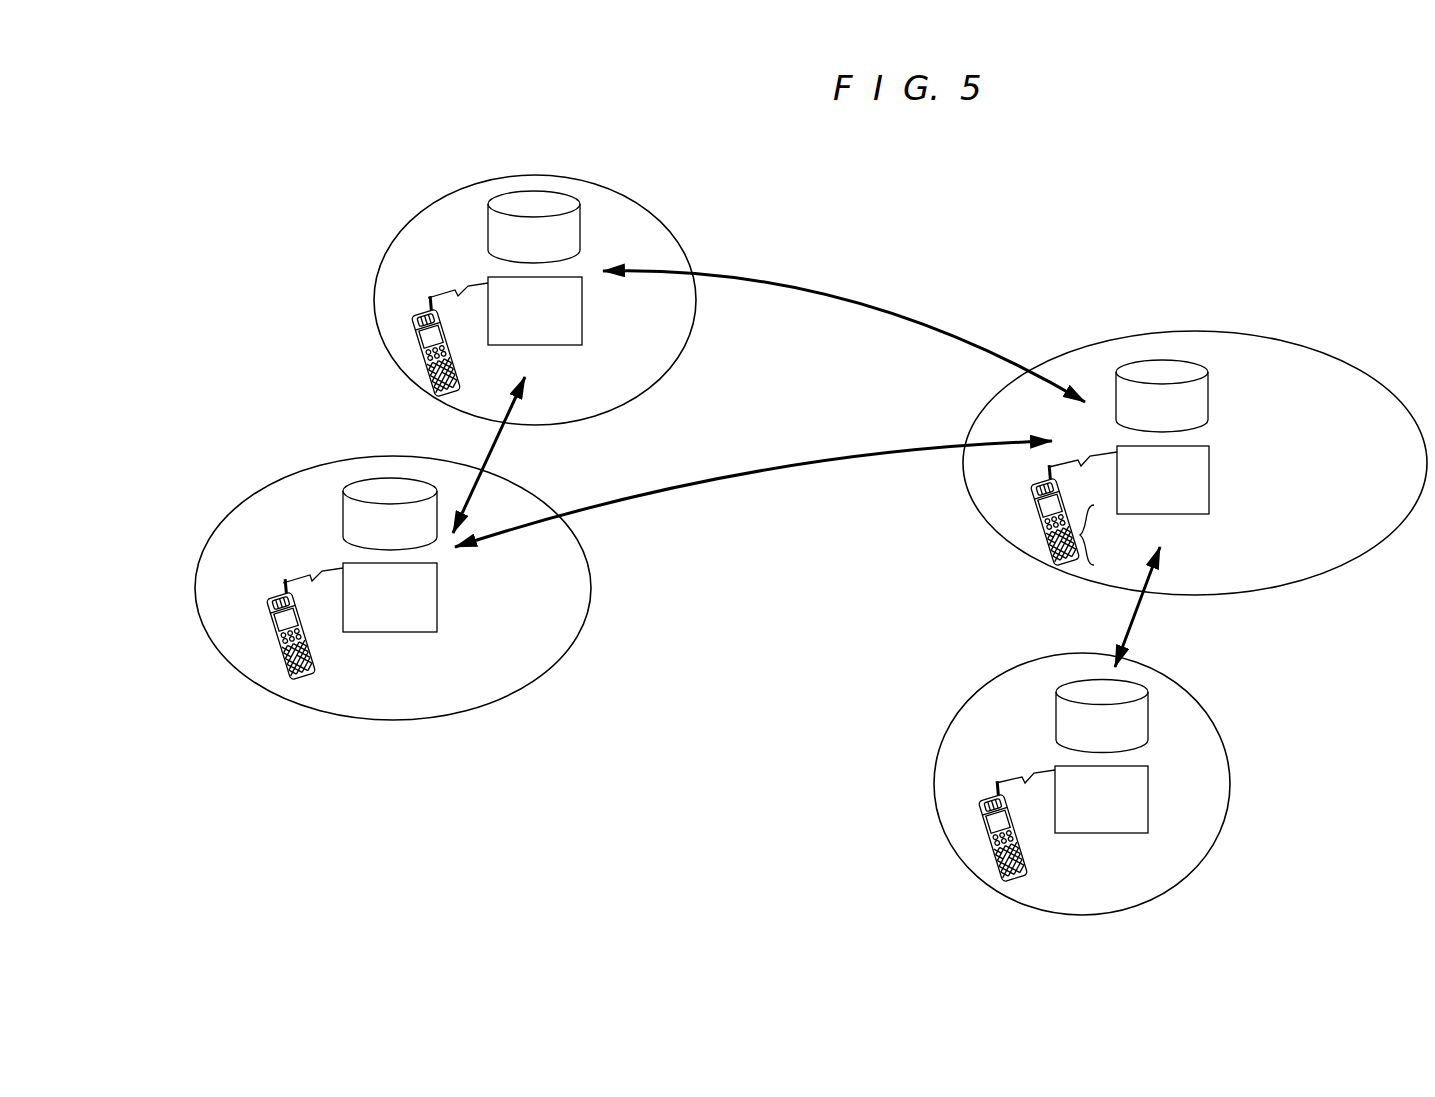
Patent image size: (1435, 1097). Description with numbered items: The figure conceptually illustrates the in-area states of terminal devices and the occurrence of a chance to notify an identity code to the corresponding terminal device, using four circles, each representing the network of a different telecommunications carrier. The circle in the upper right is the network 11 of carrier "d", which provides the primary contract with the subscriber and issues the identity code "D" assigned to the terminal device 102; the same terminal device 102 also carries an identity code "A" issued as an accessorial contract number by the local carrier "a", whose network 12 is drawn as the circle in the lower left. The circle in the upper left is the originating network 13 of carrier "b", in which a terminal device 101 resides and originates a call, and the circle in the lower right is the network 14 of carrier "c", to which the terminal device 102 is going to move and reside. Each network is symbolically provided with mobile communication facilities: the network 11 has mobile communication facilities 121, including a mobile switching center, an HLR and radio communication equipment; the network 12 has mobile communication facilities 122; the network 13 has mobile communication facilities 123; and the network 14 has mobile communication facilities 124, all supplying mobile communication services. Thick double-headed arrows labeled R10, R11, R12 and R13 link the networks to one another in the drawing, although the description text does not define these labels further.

The network 11 is at (1293, 338).
The network 12 is at (594, 592).
The network 13 is at (617, 188).
The network 14 is at (1175, 680).
The terminal device 101 is at (413, 348).
The terminal device 102 is at (270, 635).
The mobile communication facilities 121 is at (1107, 428).
The mobile communication facilities 122 is at (338, 543).
The mobile communication facilities 123 is at (478, 256).
The mobile communication facilities 124 is at (1048, 746).
The route R10 is at (502, 436).
The route R11 is at (848, 300).
The route R12 is at (741, 472).
The route R13 is at (1134, 607).